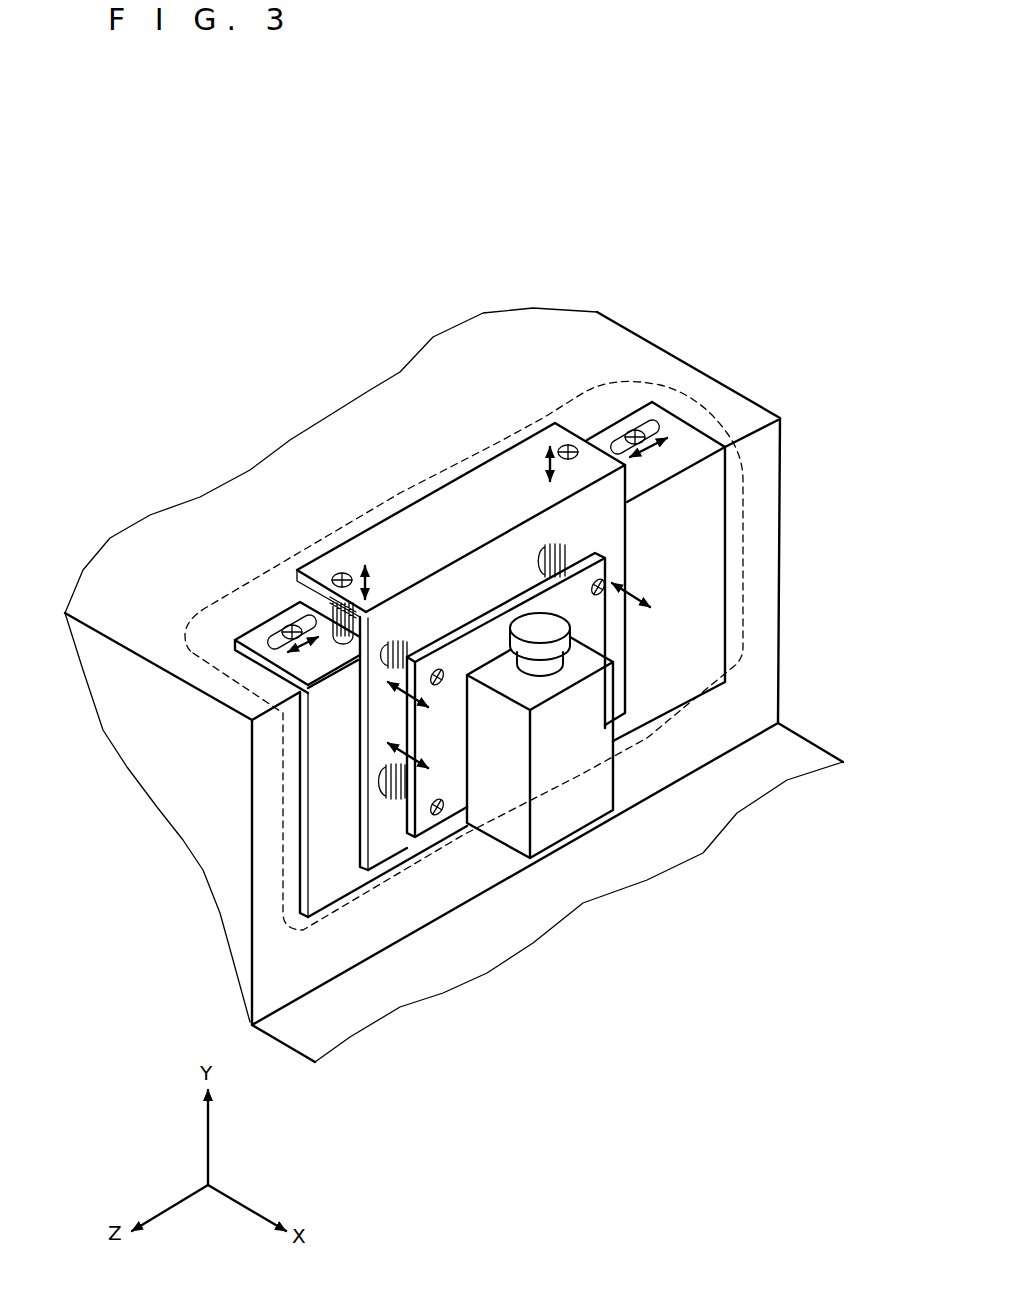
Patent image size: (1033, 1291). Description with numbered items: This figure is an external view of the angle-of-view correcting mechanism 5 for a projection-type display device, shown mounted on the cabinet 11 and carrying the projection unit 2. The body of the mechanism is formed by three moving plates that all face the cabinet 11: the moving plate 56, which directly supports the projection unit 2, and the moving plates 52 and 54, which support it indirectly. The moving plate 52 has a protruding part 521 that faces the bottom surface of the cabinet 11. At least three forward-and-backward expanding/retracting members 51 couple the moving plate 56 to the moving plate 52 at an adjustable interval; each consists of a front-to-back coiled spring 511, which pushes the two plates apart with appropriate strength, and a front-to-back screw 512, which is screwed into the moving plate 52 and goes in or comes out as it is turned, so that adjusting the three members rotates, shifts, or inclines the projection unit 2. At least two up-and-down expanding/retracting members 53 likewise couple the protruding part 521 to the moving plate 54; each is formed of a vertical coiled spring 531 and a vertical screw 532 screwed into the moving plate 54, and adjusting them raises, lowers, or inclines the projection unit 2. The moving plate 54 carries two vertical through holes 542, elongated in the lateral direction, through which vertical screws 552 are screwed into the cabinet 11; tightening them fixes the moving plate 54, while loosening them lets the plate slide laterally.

The projection unit 2 is at (613, 778).
The angle-of-view correcting mechanism 5 is at (180, 627).
The cabinet 11 is at (208, 848).
The forward-and-backward expanding/retracting member 51 is at (848, 507).
The front-to-back coiled spring 511 is at (563, 562).
The front-to-back screw 512 is at (601, 580).
The moving plate 52 is at (573, 510).
The protruding part 521 is at (300, 590).
The up-and-down expanding/retracting member 53 is at (205, 407).
The vertical coiled spring 531 is at (313, 603).
The vertical screw 532 is at (334, 574).
The moving plate 54 is at (702, 480).
The vertical through hole 542 is at (270, 642).
The vertical screw 552 is at (286, 627).
The moving plate 56 is at (510, 602).